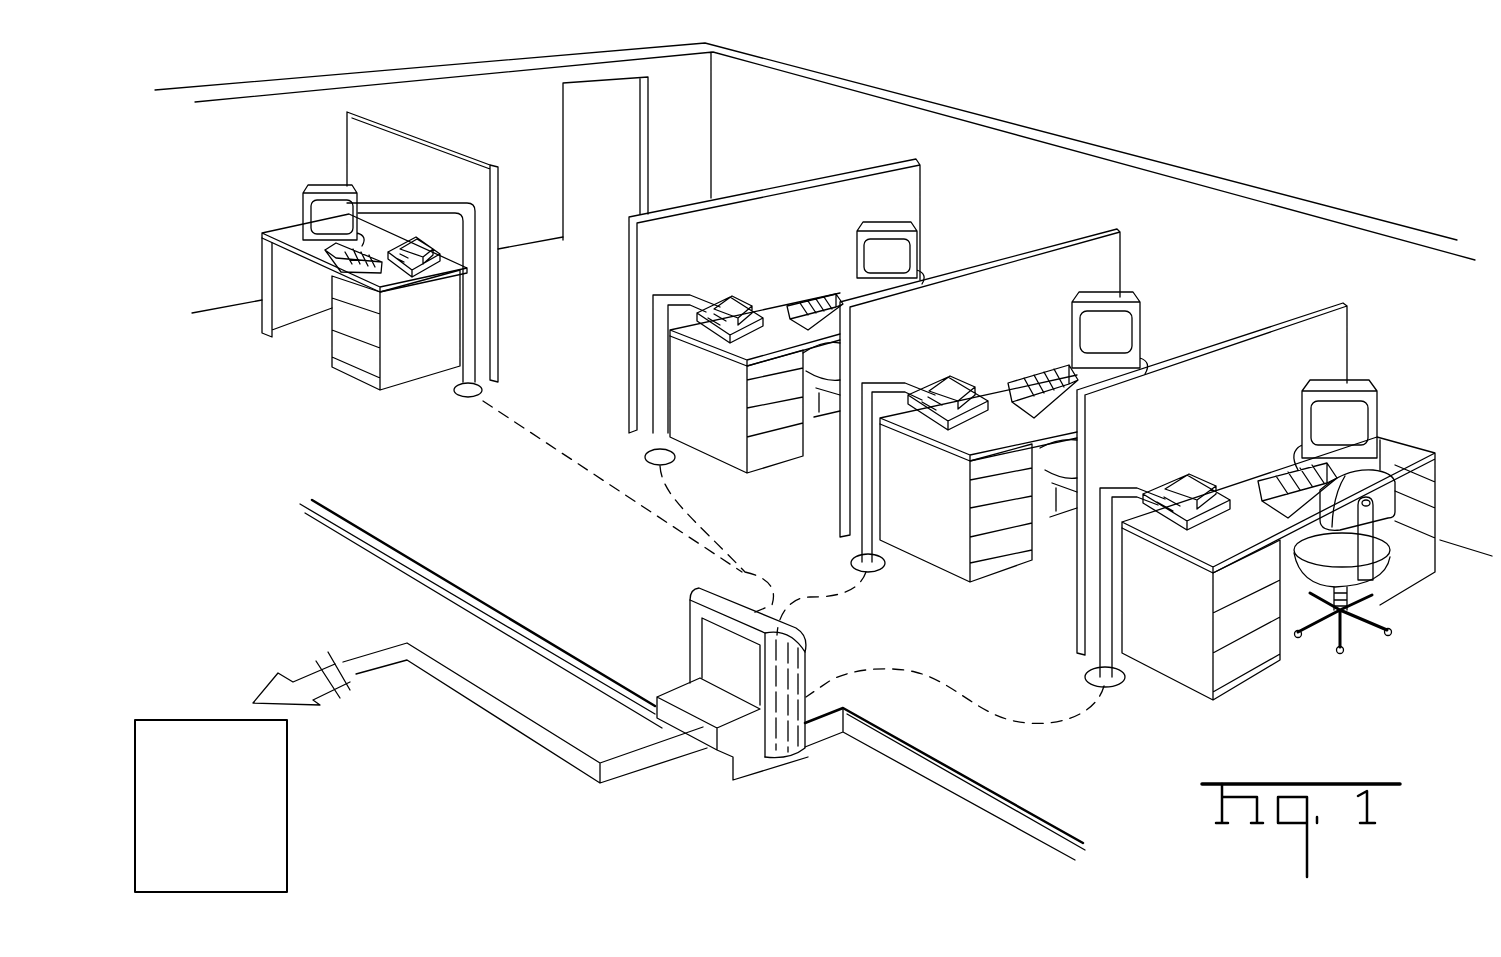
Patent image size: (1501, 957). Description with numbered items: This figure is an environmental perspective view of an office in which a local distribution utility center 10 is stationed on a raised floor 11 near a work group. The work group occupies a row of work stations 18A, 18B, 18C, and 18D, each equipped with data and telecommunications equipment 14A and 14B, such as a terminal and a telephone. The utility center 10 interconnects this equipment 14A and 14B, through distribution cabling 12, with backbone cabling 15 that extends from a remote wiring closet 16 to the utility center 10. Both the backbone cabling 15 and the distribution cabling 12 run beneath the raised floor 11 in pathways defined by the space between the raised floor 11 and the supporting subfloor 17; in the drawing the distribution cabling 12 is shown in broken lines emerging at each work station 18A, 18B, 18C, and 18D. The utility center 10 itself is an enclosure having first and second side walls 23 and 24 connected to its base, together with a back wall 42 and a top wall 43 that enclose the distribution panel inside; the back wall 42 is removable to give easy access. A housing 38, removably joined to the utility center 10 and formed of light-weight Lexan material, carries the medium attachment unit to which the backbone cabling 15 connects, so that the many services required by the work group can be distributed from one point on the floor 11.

The utility center 10 is at (717, 709).
The raised floor 11 is at (478, 520).
The distribution cabling 12 is at (698, 510).
The data and telecommunications equipment 14A is at (337, 189).
The data and telecommunications equipment 14B is at (406, 241).
The backbone cabling 15 is at (507, 723).
The remote wiring closet 16 is at (227, 811).
The supporting subfloor 17 is at (350, 544).
The work station 18A is at (452, 142).
The work station 18B is at (824, 181).
The work station 18C is at (1080, 221).
The work station 18D is at (1279, 322).
The first side wall 23 is at (690, 646).
The second side wall 24 is at (787, 706).
The MAU housing 38 is at (697, 745).
The back wall 42 is at (742, 676).
The top wall 43 is at (732, 612).